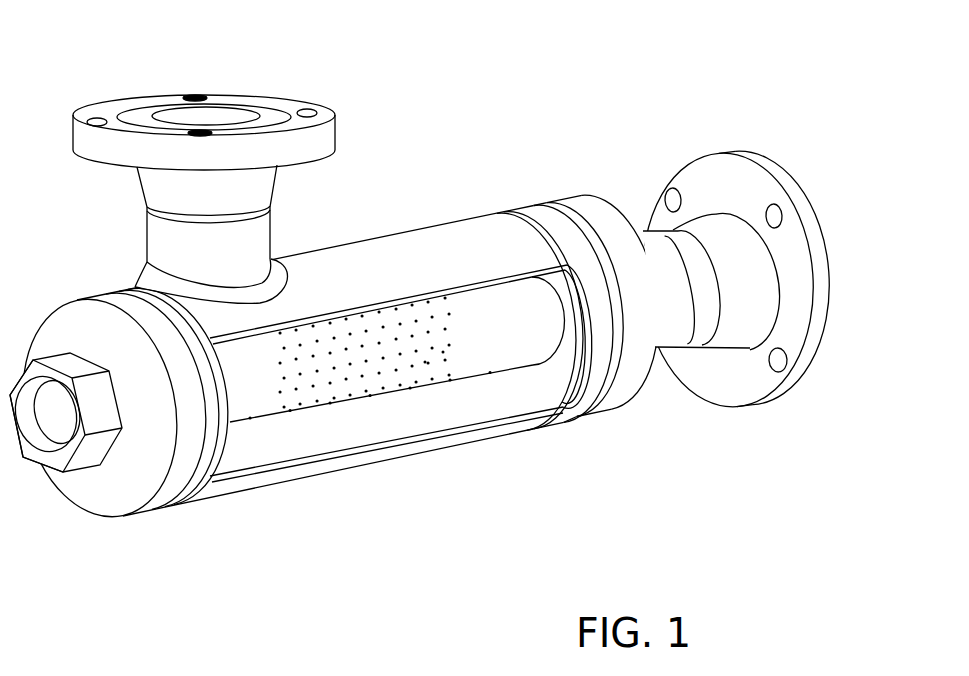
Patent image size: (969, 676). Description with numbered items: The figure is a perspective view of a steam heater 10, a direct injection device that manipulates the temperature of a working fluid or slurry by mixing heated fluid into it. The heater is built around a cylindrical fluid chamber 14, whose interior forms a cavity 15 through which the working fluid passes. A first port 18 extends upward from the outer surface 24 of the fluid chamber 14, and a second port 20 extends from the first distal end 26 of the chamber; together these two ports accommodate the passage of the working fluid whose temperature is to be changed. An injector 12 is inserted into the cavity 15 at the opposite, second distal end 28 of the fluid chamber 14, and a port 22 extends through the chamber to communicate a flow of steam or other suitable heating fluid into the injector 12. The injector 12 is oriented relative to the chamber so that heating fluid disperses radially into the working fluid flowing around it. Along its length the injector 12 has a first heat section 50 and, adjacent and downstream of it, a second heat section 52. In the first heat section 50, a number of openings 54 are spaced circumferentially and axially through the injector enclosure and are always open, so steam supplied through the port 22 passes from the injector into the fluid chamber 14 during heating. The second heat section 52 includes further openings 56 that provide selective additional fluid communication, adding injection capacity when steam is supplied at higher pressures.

The steam heater 10 is at (464, 322).
The injector 12 is at (260, 402).
The fluid chamber 14 is at (425, 427).
The cavity 15 is at (355, 437).
The first port 18 is at (267, 190).
The second port 20 is at (753, 260).
The port 22 is at (37, 445).
The outer surface 24 is at (505, 235).
The first distal end 26 is at (633, 387).
The second distal end 28 is at (163, 500).
The first heat section 50 is at (340, 337).
The second heat section 52 is at (443, 352).
The openings 54 is at (315, 397).
The openings 56 is at (425, 362).